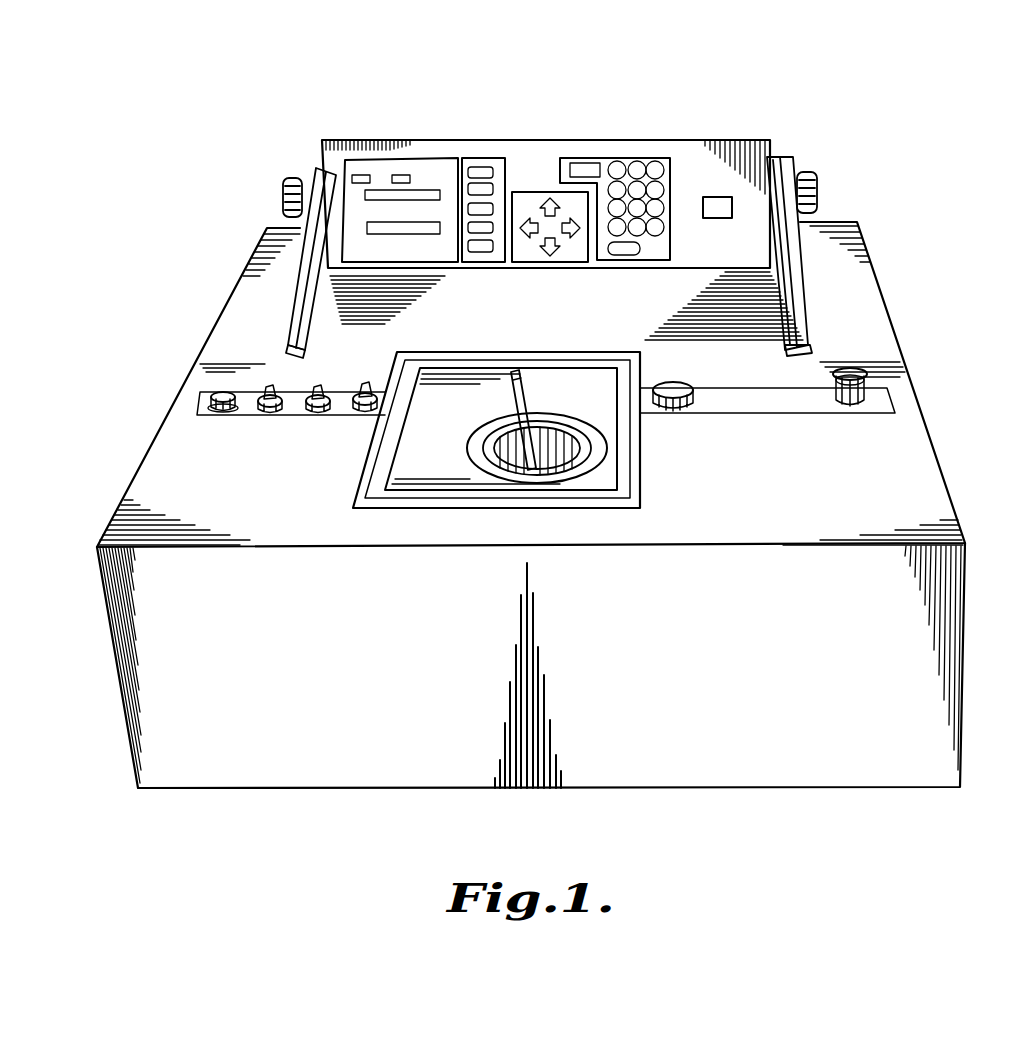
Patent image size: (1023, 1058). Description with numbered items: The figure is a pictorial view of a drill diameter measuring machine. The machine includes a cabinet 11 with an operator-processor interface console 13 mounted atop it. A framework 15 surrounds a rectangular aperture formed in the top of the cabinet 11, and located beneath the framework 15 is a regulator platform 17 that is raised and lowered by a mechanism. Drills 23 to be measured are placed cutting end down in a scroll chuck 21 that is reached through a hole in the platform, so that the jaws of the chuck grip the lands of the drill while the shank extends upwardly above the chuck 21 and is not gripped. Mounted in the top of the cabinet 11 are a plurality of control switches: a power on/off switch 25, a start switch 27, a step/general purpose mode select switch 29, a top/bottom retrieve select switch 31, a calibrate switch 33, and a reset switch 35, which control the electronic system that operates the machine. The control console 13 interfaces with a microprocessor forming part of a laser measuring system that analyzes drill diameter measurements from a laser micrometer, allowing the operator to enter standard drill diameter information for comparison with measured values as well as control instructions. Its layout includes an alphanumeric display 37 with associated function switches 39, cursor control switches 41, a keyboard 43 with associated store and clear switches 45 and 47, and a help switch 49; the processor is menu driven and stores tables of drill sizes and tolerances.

The cabinet 11 is at (935, 410).
The operator-processor interface console 13 is at (712, 132).
The framework 15 is at (640, 472).
The regulator platform 17 is at (425, 470).
The scroll chuck 21 is at (553, 433).
The drill 23 is at (522, 402).
The power on/off switch 25 is at (862, 370).
The start switch 27 is at (694, 384).
The step/general purpose mode select switch 29 is at (368, 389).
The top/bottom retrieve select switch 31 is at (311, 392).
The calibrate switch 33 is at (262, 408).
The reset switch 35 is at (223, 393).
The alphanumeric display 37 is at (437, 168).
The function switches 39 is at (487, 158).
The cursor control switches 41 is at (523, 190).
The keyboard 43 is at (635, 158).
The store switch 45 is at (590, 160).
The clear switch 47 is at (633, 253).
The help switch 49 is at (722, 203).